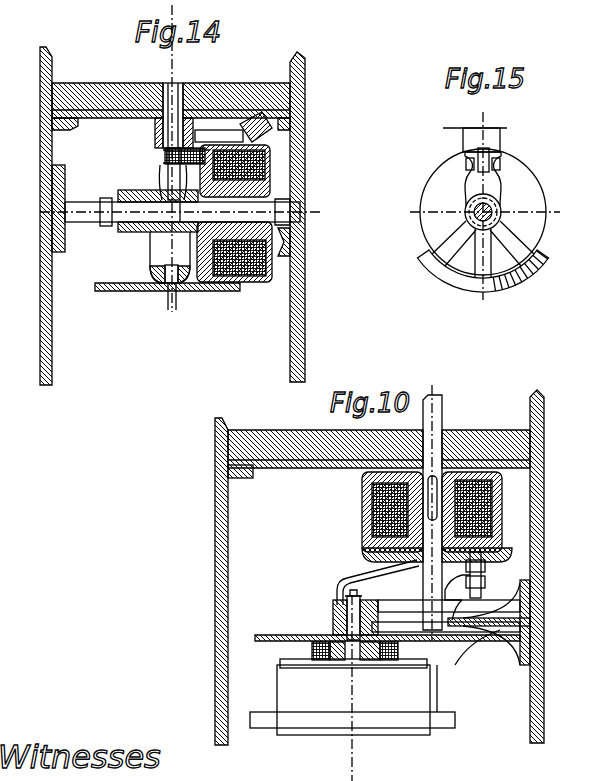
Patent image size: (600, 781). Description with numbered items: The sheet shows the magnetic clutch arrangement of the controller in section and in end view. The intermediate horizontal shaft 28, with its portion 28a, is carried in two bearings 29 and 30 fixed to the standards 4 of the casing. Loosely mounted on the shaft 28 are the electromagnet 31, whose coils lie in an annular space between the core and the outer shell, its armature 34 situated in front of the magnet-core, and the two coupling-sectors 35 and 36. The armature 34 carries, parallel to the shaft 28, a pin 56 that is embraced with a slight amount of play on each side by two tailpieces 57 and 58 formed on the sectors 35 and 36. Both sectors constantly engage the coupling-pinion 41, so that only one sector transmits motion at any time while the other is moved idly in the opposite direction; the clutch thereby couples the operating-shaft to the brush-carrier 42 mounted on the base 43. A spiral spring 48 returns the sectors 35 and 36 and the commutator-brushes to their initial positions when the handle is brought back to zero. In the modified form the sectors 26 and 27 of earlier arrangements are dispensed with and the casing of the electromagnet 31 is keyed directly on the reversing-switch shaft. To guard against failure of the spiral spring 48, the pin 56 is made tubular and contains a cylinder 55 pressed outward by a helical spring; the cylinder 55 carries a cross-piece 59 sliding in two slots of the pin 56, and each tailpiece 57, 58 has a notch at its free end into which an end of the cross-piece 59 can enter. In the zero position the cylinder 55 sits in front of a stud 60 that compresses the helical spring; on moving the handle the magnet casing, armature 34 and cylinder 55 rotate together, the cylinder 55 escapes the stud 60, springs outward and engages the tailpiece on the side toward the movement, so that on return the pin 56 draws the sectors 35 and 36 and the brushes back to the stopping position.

In FIG. 14, the standards 4 is at (42, 146).
In FIG. 14, the sector 26 is at (219, 130).
In FIG. 14, the sector 27 is at (258, 136).
In FIG. 14, the intermediate horizontal shaft 28 is at (182, 212).
In FIG. 14, the shaft portion 28a is at (235, 212).
In FIG. 14, the bearing 29 is at (62, 160).
In FIG. 14, the bearing 30 is at (296, 258).
In FIG. 14, the electromagnet 31 is at (278, 270).
In FIG. 10, the electromagnet 31 is at (362, 505).
In FIG. 14, the armature 34 is at (175, 168).
In FIG. 10, the armature 34 is at (370, 548).
In FIG. 14, the coupling-sector 35 is at (150, 255).
In FIG. 15, the coupling-sector 35 is at (483, 249).
In FIG. 10, the coupling-sector 35 is at (380, 612).
In FIG. 14, the coupling-sector 36 is at (178, 278).
In FIG. 15, the coupling-sector 36 is at (483, 271).
In FIG. 10, the coupling-sector 36 is at (355, 560).
In FIG. 14, the coupling-pinion 41 is at (190, 295).
In FIG. 10, the coupling-pinion 41 is at (335, 602).
In FIG. 14, the brush-carrier 42 is at (110, 291).
In FIG. 10, the brush-carrier 42 is at (288, 635).
In FIG. 10, the base block 43 is at (352, 697).
In FIG. 10, the spiral spring 48 is at (388, 660).
In FIG. 14, the cylinder 55 is at (163, 154).
In FIG. 15, the cylinder 55 is at (494, 166).
In FIG. 10, the tubular pin 56 is at (470, 588).
In FIG. 10, the tailpiece 57 is at (484, 580).
In FIG. 10, the tailpiece 58 is at (486, 566).
In FIG. 15, the cross-piece 59 is at (492, 162).
In FIG. 14, the stud 60 is at (155, 134).
In FIG. 15, the stud 60 is at (475, 140).